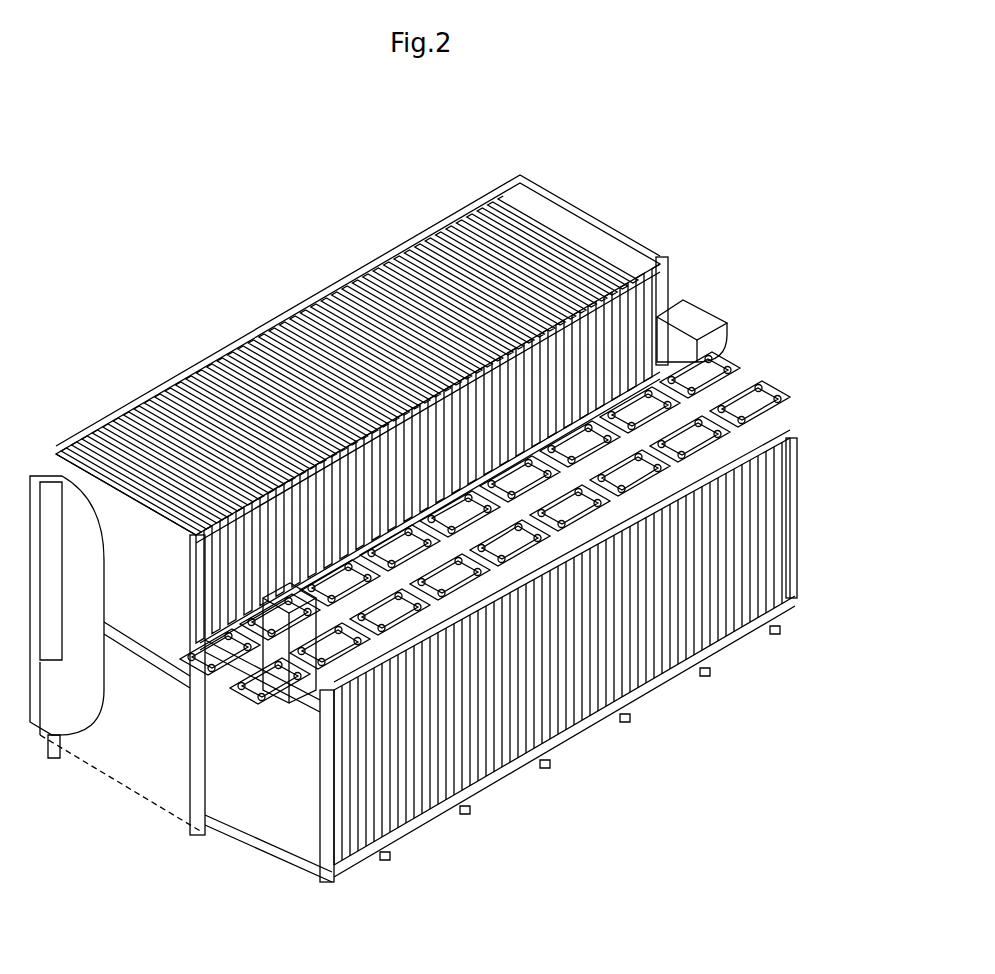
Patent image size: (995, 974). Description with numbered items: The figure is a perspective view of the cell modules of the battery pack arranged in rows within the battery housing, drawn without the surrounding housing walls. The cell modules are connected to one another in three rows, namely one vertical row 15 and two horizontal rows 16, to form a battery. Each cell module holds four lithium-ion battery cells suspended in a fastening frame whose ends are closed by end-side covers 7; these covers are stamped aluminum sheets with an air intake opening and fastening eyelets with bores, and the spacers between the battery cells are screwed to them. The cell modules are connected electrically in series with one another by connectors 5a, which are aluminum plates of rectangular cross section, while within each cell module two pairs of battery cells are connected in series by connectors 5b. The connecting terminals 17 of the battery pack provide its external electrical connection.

The horizontal rows 16 is at (627, 198).
The end-side covers 7 is at (663, 263).
The connecting terminals 17 is at (690, 318).
The connectors 5a is at (748, 400).
The connectors 5b is at (695, 380).
The vertical row 15 is at (503, 800).